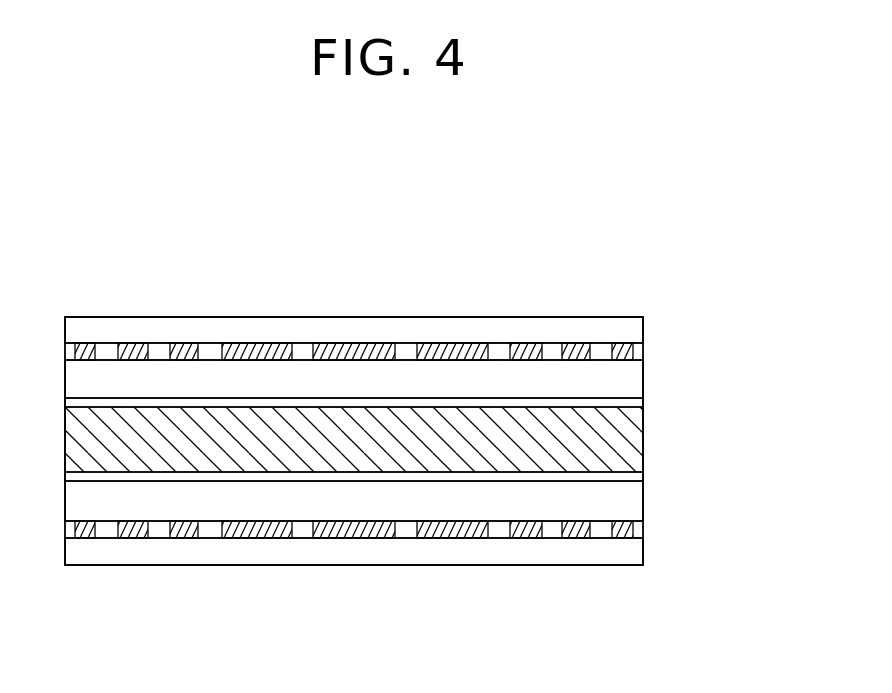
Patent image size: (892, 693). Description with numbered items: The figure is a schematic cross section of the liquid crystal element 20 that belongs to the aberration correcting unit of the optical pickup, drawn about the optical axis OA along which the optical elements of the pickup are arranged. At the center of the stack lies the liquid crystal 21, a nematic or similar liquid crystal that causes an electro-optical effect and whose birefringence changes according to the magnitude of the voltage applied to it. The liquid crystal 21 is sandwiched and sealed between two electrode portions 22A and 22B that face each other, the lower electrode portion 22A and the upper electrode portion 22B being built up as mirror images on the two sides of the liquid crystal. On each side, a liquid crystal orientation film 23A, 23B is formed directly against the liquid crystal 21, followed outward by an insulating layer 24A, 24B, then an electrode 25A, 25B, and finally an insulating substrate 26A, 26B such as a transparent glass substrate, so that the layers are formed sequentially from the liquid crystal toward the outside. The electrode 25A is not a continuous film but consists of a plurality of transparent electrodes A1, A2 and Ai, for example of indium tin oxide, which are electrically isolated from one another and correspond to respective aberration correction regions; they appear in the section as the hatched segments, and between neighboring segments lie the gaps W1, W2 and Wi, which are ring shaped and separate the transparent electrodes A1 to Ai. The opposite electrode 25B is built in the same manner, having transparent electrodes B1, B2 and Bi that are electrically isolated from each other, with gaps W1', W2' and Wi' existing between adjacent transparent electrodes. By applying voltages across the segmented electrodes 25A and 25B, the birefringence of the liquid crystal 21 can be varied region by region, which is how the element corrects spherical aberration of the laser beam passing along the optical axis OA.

The liquid crystal element 20 is at (673, 275).
The liquid crystal 21 is at (645, 447).
The electrode portion 22A is at (735, 460).
The electrode portion 22B is at (735, 292).
The liquid crystal orientation film 23A is at (645, 478).
The liquid crystal orientation film 23B is at (645, 407).
The insulating layer 24A is at (645, 513).
The insulating layer 24B is at (645, 385).
The electrode 25A is at (645, 530).
The electrode 25B is at (645, 355).
The insulating substrate 26A is at (645, 557).
The insulating substrate 26B is at (645, 333).
The optical axis OA is at (354, 635).
The transparent electrode A1 is at (368, 537).
The transparent electrode A2 is at (458, 537).
The transparent electrode Ai is at (618, 537).
The transparent electrode B1 is at (369, 347).
The transparent electrode B2 is at (457, 347).
The transparent electrode Bi is at (620, 347).
The gap W1 is at (427, 595).
The gap W2 is at (524, 595).
The gap Wi is at (636, 595).
The gap W1' is at (428, 282).
The gap W2' is at (519, 282).
The gap Wi' is at (623, 282).